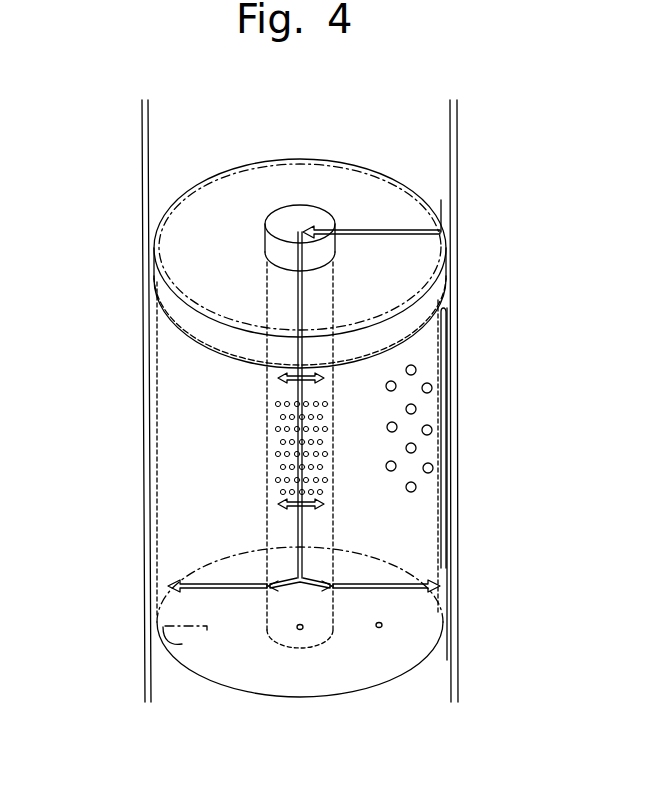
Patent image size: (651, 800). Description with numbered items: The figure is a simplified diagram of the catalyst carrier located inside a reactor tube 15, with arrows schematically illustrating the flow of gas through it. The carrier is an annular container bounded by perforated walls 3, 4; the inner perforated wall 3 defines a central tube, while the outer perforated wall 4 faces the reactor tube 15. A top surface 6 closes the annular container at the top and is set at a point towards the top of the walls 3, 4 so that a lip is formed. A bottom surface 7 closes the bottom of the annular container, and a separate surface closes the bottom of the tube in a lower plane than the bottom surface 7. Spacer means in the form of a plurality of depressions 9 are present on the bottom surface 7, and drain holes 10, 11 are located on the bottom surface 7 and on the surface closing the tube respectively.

The reactor tube 15 is at (142, 162).
The top surface 6 is at (312, 178).
The inner perforated wall 3 is at (278, 462).
The perforated wall 4 is at (423, 408).
The bottom surface 7 is at (378, 690).
The depressions 9 is at (165, 644).
The drain hole 10 is at (383, 624).
The drain hole 11 is at (299, 632).